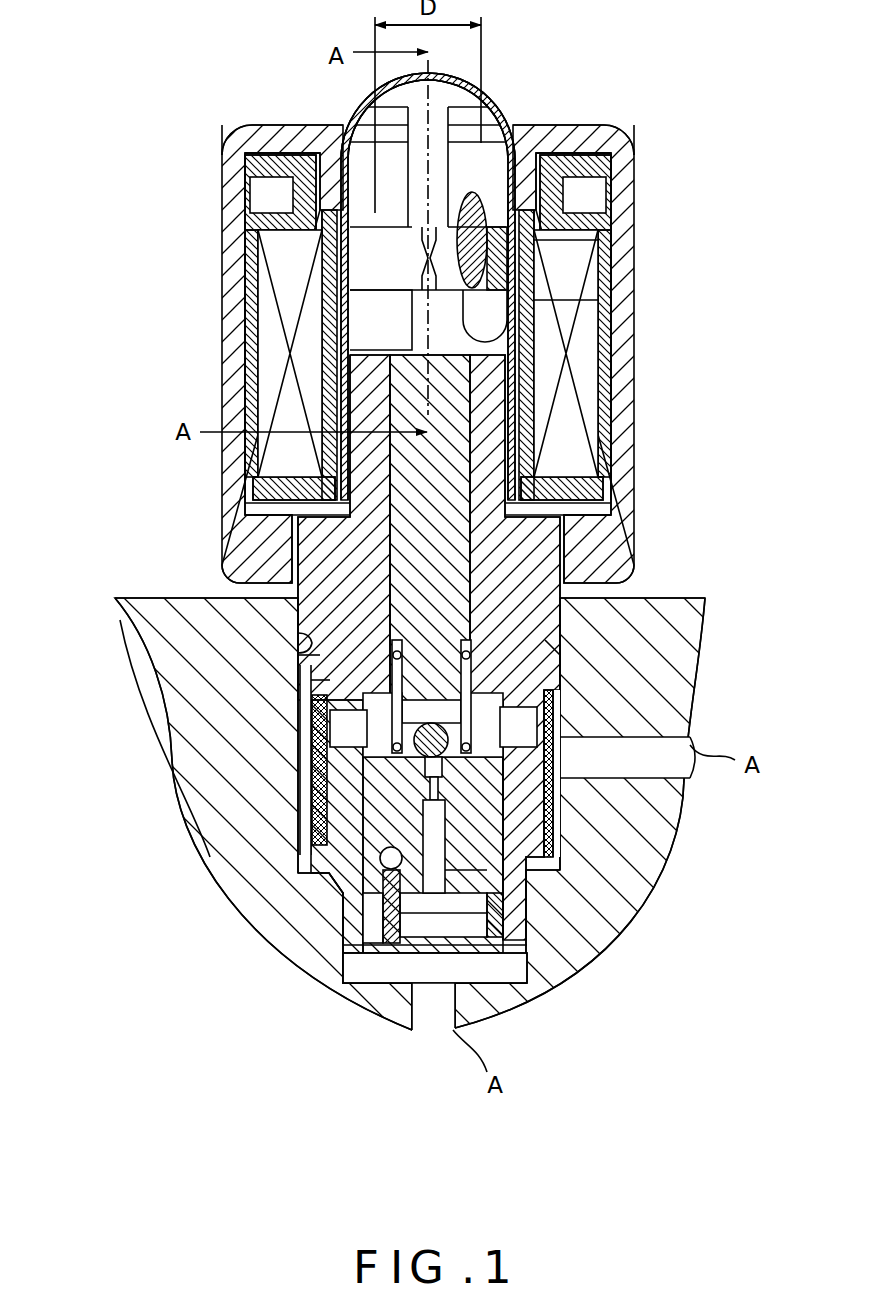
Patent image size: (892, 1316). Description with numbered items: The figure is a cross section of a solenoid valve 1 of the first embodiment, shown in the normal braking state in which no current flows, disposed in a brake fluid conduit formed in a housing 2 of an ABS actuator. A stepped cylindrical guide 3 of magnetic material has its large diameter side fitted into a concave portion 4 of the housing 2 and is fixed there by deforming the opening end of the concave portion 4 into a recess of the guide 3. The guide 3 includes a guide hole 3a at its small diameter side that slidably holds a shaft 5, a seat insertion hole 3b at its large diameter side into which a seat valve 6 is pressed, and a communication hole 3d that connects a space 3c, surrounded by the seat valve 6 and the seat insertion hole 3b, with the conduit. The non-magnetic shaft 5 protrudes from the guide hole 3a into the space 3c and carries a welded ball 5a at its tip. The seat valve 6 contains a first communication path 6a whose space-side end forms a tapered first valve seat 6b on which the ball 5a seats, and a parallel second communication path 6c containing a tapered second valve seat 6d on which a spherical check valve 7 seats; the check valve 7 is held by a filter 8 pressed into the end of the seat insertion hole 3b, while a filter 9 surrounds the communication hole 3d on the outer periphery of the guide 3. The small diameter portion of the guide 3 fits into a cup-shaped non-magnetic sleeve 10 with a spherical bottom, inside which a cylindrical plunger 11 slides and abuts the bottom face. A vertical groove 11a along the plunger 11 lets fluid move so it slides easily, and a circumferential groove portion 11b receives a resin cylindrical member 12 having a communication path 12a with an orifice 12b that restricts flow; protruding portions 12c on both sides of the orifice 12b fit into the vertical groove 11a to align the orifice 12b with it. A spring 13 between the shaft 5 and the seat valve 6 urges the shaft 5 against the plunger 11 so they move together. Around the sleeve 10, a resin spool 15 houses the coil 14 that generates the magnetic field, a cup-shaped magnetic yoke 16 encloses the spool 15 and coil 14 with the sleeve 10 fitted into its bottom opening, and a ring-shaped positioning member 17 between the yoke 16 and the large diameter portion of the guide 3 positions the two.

The solenoid valve 1 is at (240, 113).
The housing 2 is at (200, 881).
The guide 3 is at (300, 643).
The guide hole 3a is at (365, 655).
The seat insertion hole 3b is at (465, 872).
The space 3c is at (325, 700).
The communication hole 3d is at (550, 668).
The concave portion 4 is at (300, 870).
The shaft 5 is at (300, 637).
The ball 5a is at (545, 800).
The seat valve 6 is at (540, 880).
The first communication path 6a is at (380, 985).
The first valve seat 6b is at (320, 740).
The second communication path 6c is at (315, 800).
The second valve seat 6d is at (380, 862).
The check valve 7 is at (418, 752).
The filter 8 is at (490, 960).
The filter 9 is at (552, 735).
The sleeve 10 is at (483, 88).
The plunger 11 is at (505, 113).
The vertical groove 11a is at (485, 100).
The groove portion 11b is at (492, 297).
The cylindrical member 12 is at (360, 247).
The communication path 12a is at (245, 362).
The orifice 12b is at (335, 300).
The protruding portions 12c is at (418, 232).
The spring 13 is at (548, 655).
The coil 14 is at (590, 315).
The spool 15 is at (637, 173).
The yoke 16 is at (640, 410).
The positioning member 17 is at (585, 555).